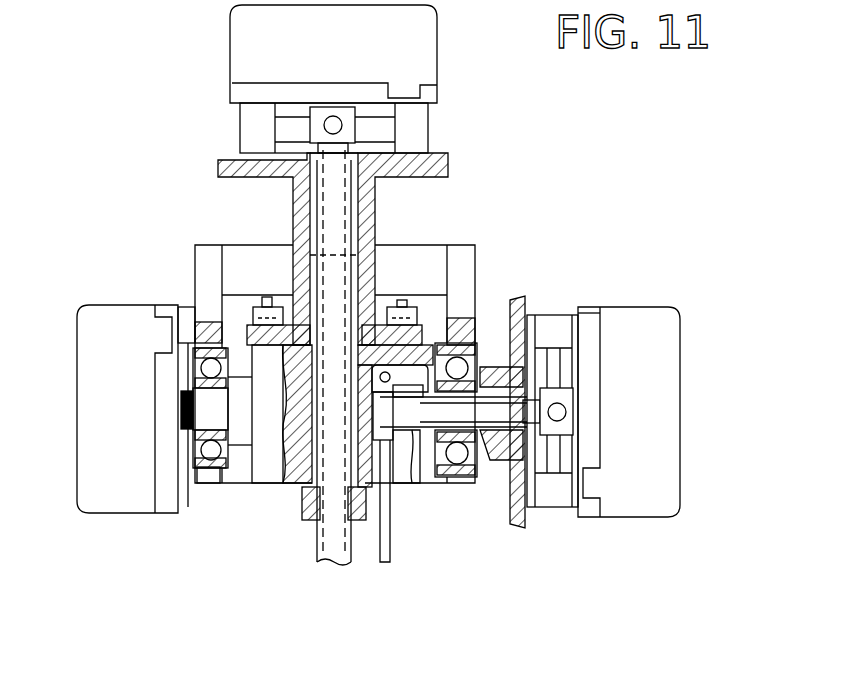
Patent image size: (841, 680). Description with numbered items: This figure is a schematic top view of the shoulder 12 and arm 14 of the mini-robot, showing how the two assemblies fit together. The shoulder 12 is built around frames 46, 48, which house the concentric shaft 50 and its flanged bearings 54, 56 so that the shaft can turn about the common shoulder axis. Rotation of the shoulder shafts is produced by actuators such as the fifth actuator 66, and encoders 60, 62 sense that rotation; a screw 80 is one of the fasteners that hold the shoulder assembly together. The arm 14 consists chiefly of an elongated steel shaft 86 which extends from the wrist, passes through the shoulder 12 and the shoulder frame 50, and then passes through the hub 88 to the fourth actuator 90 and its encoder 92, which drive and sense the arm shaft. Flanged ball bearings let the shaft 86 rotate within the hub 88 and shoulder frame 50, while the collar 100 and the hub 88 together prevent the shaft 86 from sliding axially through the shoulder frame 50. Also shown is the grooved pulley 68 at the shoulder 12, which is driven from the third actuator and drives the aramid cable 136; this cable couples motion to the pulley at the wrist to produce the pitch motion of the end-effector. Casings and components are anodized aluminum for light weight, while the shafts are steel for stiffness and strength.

The shoulder 12 is at (665, 240).
The arm 14 is at (567, 167).
The frame 46 is at (195, 270).
The frame 48 is at (435, 245).
The concentric shaft 50 is at (265, 485).
The flanged bearing 54 is at (195, 485).
The flanged bearing 56 is at (480, 478).
The encoder 60 is at (77, 473).
The encoder 62 is at (680, 377).
The fifth actuator 66 is at (553, 507).
The grooved pulley 68 is at (417, 470).
The screw 80 is at (525, 296).
The elongated steel shaft 86 is at (317, 537).
The hub 88 is at (218, 163).
The fourth actuator 90 is at (240, 118).
The encoder 92 is at (230, 43).
The collar 100 is at (360, 522).
The aramid cable 136 is at (393, 540).